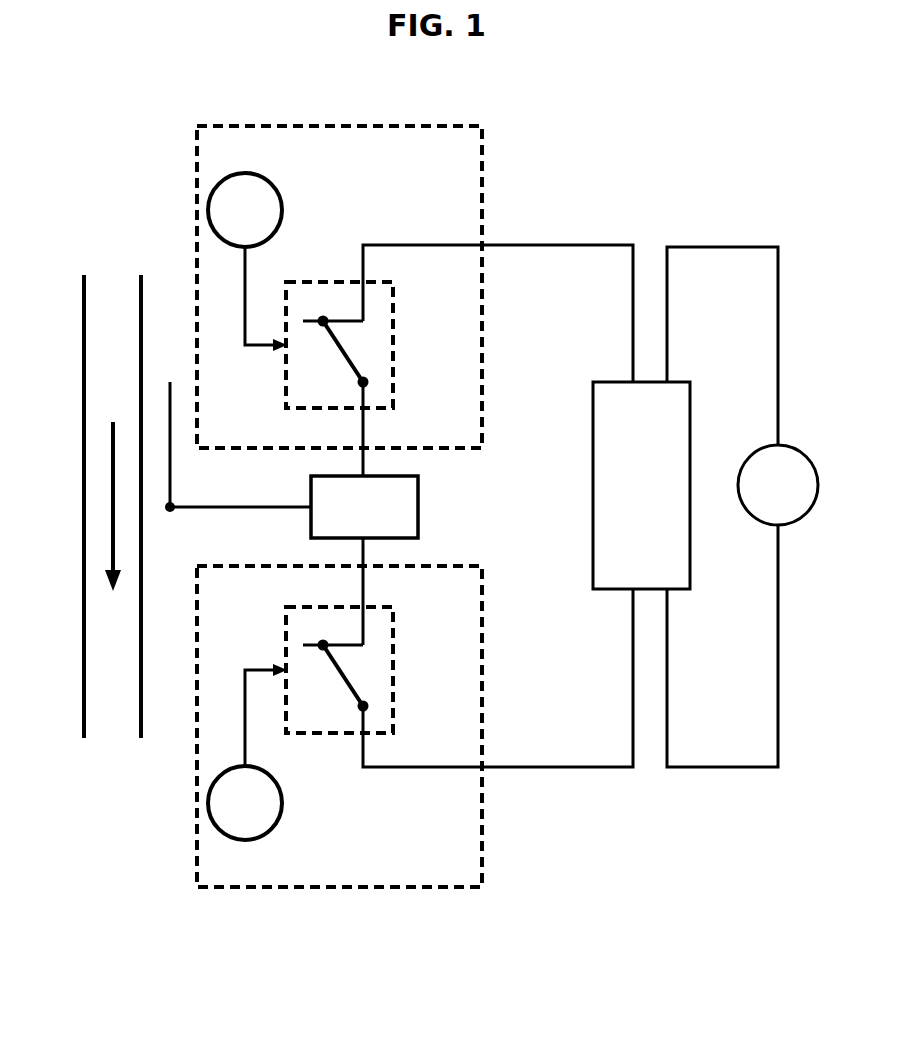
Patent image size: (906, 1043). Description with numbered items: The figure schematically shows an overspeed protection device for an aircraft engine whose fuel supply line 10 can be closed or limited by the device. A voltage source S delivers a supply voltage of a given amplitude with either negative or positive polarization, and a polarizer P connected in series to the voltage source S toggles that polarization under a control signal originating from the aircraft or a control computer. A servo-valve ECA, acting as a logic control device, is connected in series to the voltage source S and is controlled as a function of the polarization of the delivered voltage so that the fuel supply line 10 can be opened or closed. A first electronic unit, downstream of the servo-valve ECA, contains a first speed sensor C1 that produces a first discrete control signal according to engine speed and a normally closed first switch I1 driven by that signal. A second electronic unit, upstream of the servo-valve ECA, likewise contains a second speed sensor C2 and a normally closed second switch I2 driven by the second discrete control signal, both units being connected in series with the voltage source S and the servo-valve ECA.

The fuel supply line 10 is at (84, 508).
The first speed sensor C1 is at (245, 282).
The second speed sensor C2 is at (245, 733).
The first switch I1 is at (393, 345).
The second switch I2 is at (393, 668).
The servo-valve ECA is at (364, 507).
The polarizer P is at (641, 485).
The voltage source S is at (778, 485).